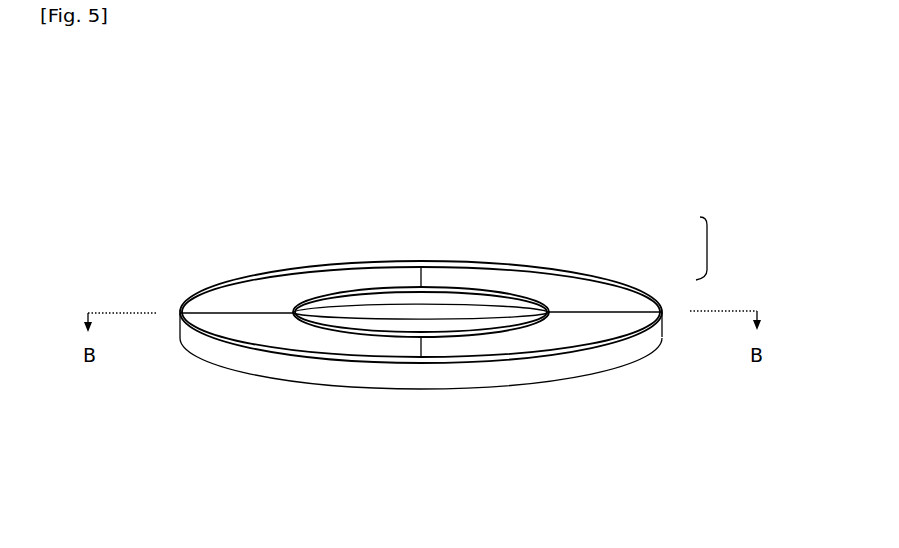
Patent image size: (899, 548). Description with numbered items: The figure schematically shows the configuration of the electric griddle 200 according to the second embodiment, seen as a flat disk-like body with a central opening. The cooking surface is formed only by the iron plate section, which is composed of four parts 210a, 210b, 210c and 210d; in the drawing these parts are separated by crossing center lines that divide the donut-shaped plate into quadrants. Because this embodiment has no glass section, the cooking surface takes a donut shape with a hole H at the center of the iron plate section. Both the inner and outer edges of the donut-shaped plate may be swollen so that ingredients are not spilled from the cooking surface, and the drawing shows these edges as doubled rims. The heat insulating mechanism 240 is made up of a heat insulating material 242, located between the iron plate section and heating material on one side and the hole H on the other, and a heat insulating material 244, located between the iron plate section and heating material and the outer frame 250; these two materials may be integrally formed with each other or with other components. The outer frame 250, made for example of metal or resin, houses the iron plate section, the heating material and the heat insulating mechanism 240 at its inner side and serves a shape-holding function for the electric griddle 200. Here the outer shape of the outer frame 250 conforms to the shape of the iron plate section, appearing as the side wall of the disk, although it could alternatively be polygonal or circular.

The electric griddle 200 is at (438, 87).
The iron plate part 210a is at (257, 296).
The iron plate part 210b is at (496, 279).
The iron plate part 210c is at (496, 346).
The iron plate part 210d is at (260, 340).
The hole H is at (414, 320).
The heat insulating mechanism 240 is at (707, 248).
The heat insulating material 242 is at (527, 300).
The heat insulating material 244 is at (638, 290).
The outer frame 250 is at (604, 363).